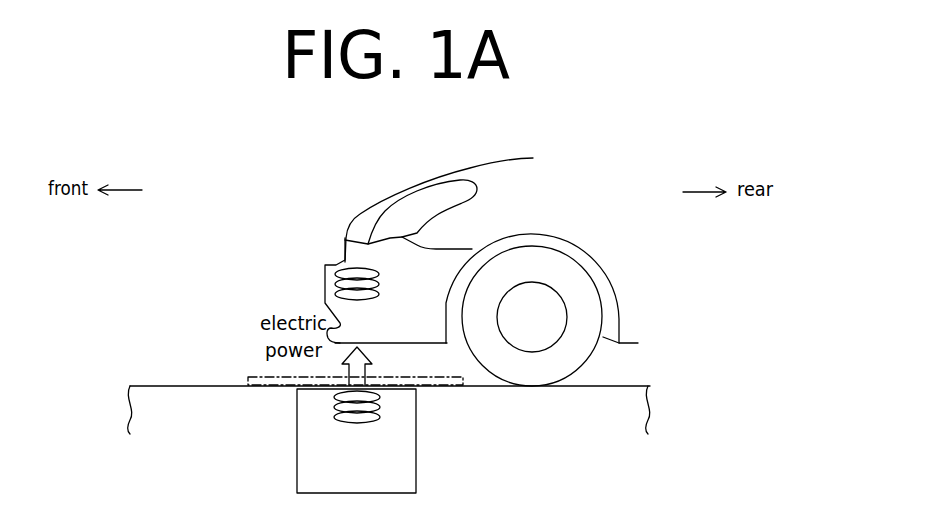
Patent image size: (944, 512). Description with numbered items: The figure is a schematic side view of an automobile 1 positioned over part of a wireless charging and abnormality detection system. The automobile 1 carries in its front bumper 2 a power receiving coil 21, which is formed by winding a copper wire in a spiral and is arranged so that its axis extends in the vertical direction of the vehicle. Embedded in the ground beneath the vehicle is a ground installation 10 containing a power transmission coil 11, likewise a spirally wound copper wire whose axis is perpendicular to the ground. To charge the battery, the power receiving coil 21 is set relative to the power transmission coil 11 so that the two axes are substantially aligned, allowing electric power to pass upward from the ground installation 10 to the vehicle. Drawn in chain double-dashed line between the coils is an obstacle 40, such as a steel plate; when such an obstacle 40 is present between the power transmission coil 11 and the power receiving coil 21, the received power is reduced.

The automobile 1 is at (479, 165).
The front bumper 2 is at (325, 284).
The power receiving coil 21 is at (348, 264).
The obstacle 40 is at (282, 378).
The ground installation 10 is at (416, 463).
The power transmission coil 11 is at (380, 417).